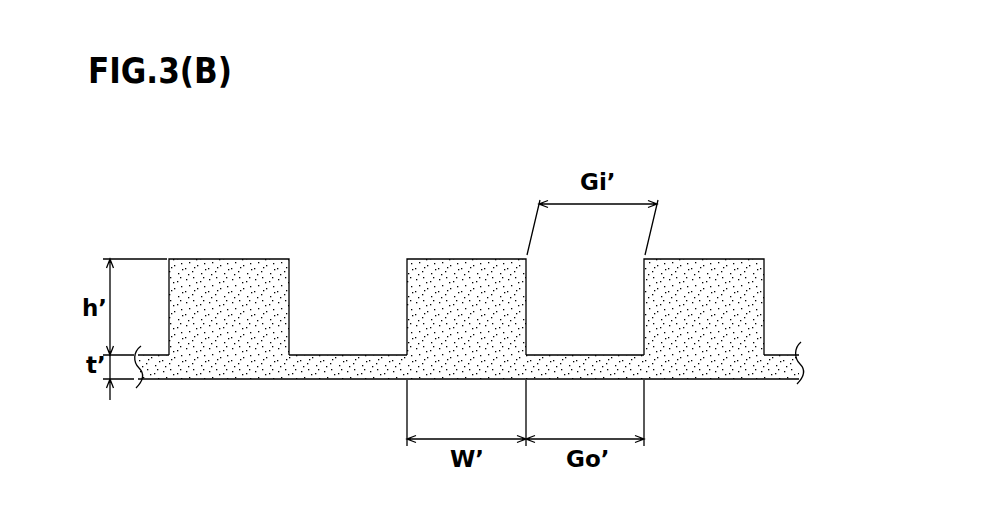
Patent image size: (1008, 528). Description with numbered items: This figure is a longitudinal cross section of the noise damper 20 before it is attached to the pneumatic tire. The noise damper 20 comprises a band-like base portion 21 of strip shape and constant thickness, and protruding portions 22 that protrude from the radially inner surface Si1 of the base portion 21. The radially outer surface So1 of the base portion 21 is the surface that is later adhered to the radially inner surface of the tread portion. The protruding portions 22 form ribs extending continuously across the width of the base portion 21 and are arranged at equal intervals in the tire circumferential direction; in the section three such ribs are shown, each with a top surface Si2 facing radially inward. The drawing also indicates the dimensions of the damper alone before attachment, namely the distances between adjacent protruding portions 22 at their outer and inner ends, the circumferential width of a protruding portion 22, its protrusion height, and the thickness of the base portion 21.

The noise damper 20 is at (729, 168).
The base portion 21 is at (343, 371).
The protruding portions 22 is at (228, 283).
The top surface of protrusion Si2 is at (723, 256).
The radially inner surface of the base portion Si1 is at (782, 354).
The radially outer surface of the base portion So1 is at (713, 381).